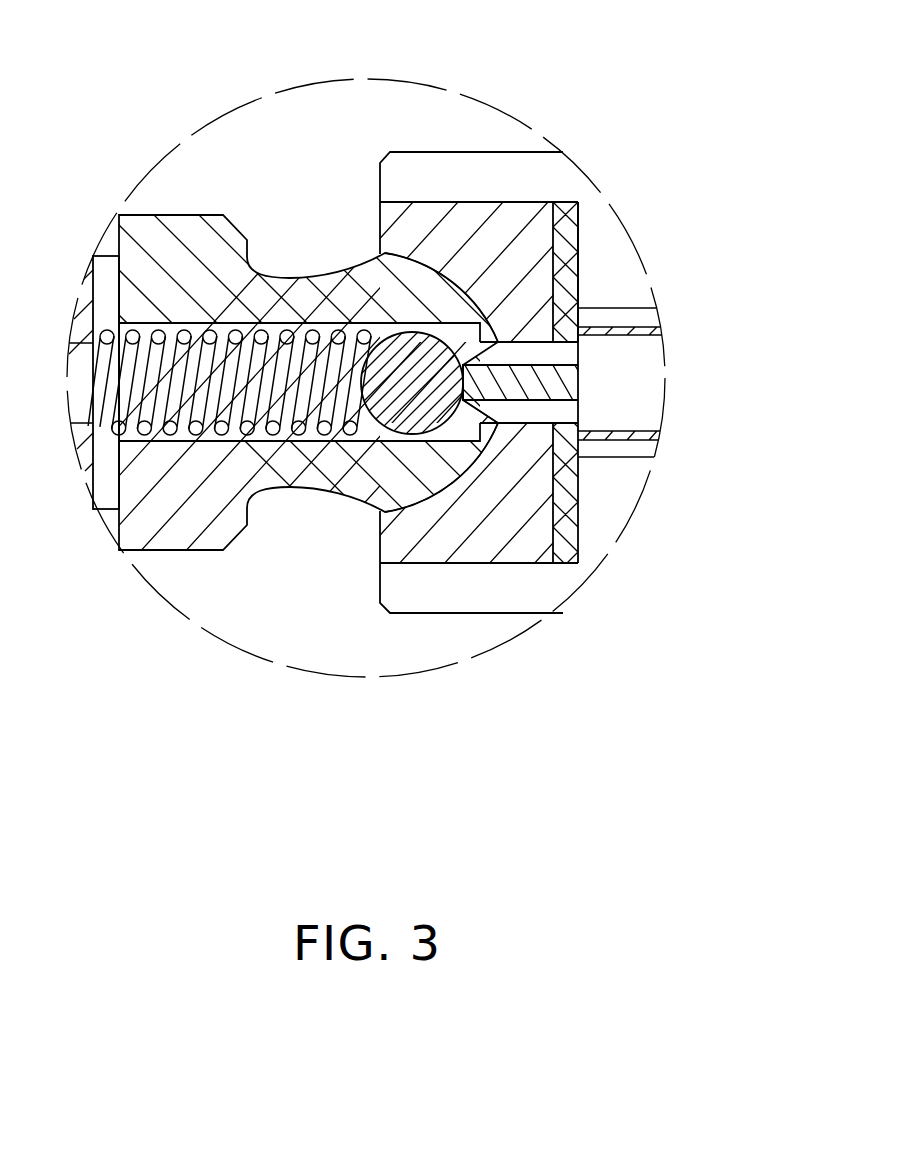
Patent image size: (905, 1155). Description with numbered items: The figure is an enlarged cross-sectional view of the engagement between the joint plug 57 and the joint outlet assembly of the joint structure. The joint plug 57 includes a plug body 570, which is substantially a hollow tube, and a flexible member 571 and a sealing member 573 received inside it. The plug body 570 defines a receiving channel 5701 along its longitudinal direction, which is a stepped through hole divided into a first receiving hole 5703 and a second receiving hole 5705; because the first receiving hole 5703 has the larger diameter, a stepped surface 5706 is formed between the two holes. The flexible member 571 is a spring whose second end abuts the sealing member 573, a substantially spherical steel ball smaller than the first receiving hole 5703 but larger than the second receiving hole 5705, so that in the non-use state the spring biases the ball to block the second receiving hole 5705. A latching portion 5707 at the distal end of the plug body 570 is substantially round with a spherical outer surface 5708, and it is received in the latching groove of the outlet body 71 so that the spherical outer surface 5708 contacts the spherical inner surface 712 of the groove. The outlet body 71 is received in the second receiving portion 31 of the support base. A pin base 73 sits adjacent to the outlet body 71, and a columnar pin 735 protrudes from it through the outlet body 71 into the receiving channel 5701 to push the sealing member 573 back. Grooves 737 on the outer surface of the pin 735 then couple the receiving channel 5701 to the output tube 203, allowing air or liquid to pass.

The second receiving portion 31 is at (432, 173).
The joint plug 57 is at (223, 708).
The plug body 570 is at (167, 470).
The flexible member 571 is at (258, 448).
The sealing member 573 is at (405, 392).
The outlet body 71 is at (507, 223).
The spherical inner surface 712 is at (423, 260).
The pin base 73 is at (565, 523).
The pin 735 is at (553, 382).
The grooves 737 is at (555, 410).
The output tube 203 is at (633, 408).
The receiving channel 5701 is at (697, 145).
The first receiving hole 5703 is at (578, 268).
The second receiving hole 5705 is at (578, 268).
The stepped surface 5706 is at (412, 505).
The latching portion 5707 is at (444, 452).
The spherical outer surface 5708 is at (500, 422).